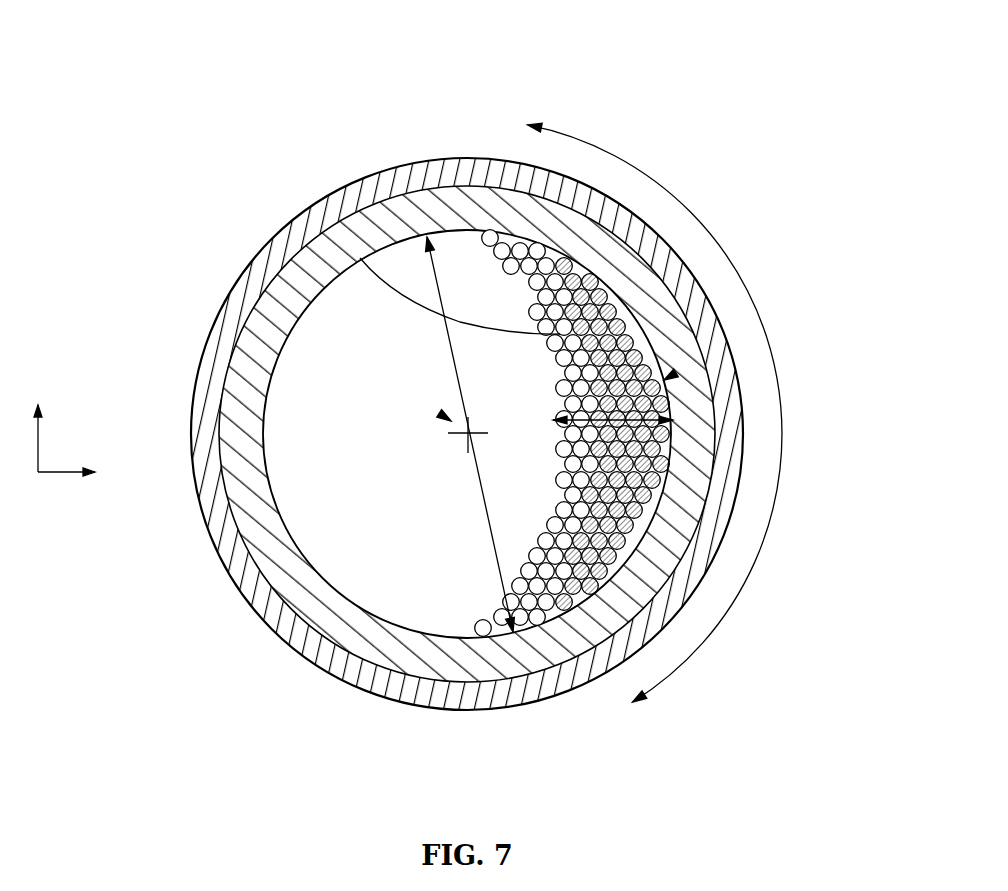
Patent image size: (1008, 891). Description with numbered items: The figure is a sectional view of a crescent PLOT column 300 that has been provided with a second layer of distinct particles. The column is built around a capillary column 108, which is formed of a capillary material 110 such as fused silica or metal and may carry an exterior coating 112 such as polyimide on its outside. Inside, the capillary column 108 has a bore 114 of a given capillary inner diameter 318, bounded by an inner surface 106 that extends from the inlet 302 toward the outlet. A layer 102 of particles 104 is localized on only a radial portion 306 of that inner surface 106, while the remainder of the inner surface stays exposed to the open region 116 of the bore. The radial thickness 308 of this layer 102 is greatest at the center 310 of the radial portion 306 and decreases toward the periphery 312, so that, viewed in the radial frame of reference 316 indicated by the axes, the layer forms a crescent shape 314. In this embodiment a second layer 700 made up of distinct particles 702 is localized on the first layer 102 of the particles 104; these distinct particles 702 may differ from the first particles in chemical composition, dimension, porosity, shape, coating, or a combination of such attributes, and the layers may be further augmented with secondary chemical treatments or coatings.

The crescent PLOT column 300 is at (497, 393).
The layer of particles 102 is at (610, 283).
The particles 104 is at (540, 245).
The inner surface 106 is at (283, 525).
The capillary column 108 is at (333, 677).
The capillary material 110 is at (282, 516).
The exterior coating 112 is at (242, 572).
The bore 114 is at (445, 478).
The open region 116 is at (427, 493).
The inlet 302 is at (451, 421).
The radial portion 306 is at (785, 414).
The radial thickness 308 is at (615, 540).
The center 310 is at (655, 520).
The periphery 312 is at (553, 333).
The crescent shape 314 is at (668, 378).
The radial frame of reference 316 is at (64, 440).
The capillary inner diameter 318 is at (598, 535).
The second layer 700 is at (427, 237).
The distinct particles 702 is at (360, 258).